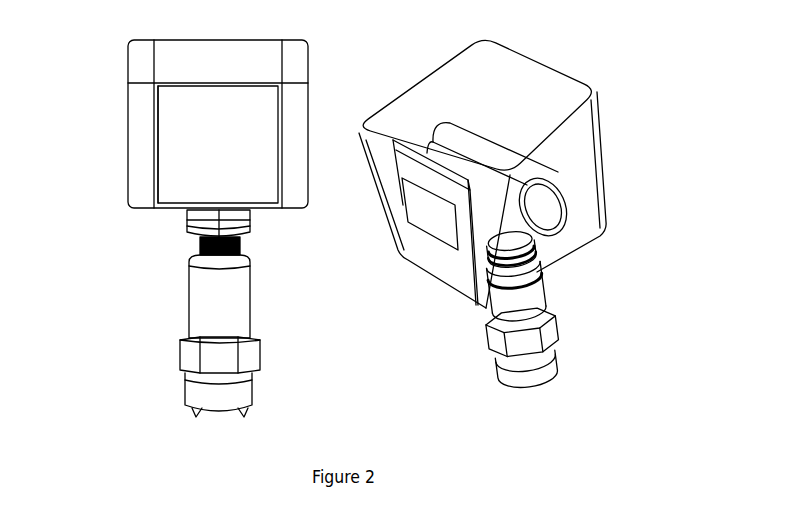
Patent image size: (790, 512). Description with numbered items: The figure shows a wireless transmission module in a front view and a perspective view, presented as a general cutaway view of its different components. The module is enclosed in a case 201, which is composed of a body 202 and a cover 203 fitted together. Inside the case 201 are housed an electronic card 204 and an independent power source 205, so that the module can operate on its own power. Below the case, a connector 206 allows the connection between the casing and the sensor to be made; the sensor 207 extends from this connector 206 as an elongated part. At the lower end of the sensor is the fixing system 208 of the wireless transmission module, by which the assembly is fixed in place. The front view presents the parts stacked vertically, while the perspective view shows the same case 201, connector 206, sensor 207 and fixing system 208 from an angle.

The case 201 is at (120, 37).
The body 202 is at (560, 247).
The cover 203 is at (567, 93).
The electronic card 204 is at (478, 211).
The independent power source 205 is at (488, 156).
The connector 206 is at (193, 223).
The sensor 207 is at (215, 302).
The fixing system 208 is at (203, 390).